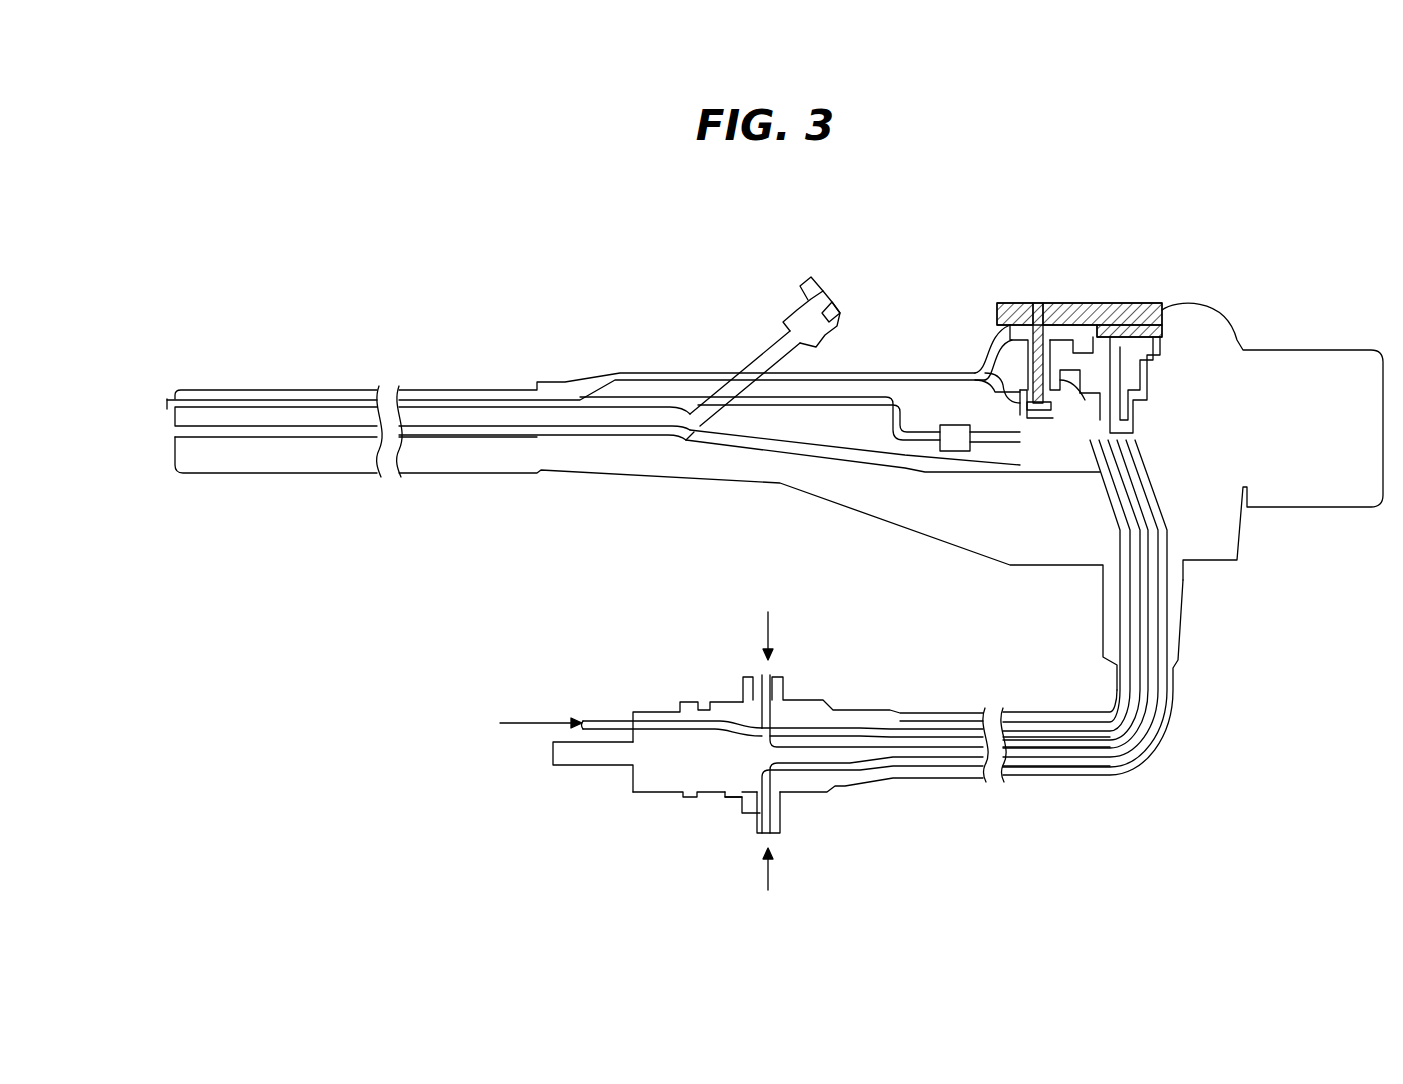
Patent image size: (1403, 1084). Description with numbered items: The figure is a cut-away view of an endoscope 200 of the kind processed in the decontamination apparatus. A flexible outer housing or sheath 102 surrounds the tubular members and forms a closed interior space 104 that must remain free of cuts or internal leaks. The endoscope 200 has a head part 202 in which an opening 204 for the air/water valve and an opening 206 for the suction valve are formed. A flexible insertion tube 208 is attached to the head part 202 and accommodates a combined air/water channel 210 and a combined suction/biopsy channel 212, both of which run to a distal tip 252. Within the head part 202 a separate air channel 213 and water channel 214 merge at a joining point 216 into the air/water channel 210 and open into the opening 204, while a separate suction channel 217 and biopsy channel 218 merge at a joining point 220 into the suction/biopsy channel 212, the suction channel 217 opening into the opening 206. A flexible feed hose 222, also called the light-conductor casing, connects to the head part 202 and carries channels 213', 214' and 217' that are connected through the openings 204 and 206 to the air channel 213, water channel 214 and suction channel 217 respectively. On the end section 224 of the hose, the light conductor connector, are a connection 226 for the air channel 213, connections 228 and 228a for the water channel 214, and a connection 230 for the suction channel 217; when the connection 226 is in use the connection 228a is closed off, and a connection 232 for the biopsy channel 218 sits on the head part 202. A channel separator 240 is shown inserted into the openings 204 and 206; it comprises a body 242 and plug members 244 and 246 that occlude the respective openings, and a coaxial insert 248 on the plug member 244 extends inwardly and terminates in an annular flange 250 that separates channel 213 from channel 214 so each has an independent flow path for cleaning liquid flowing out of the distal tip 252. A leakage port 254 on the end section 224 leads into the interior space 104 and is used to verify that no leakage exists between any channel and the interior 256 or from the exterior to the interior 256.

The outer housing or sheath 102 is at (341, 478).
The interior space 104 is at (457, 453).
The endoscope 200 is at (937, 266).
The head part 202 is at (1252, 340).
The opening 204 is at (990, 372).
The opening 206 is at (1127, 370).
The flexible insertion tube 208 is at (319, 388).
The combined air/water channel 210 is at (203, 400).
The combined suction/biopsy channel 212 is at (243, 432).
The air channel 213 is at (950, 349).
The channel 213' is at (1056, 692).
The water channel 214 is at (760, 467).
The channel 214' is at (1009, 684).
The joining point 216 is at (567, 395).
The suction channel 217 is at (893, 501).
The channel 217' is at (1056, 810).
The biopsy channel 218 is at (752, 372).
The joining point 220 is at (678, 418).
The flexible feed hose 222 is at (1154, 766).
The end section 224 is at (638, 800).
The connection 226 is at (778, 697).
The connection 228 is at (603, 720).
The connection 228a is at (742, 692).
The connection 230 is at (757, 812).
The connection 232 is at (890, 268).
The channel separator 240 is at (1138, 247).
The body 242 is at (1070, 303).
The plug member 244 is at (1037, 310).
The plug member 246 is at (1140, 302).
The coaxial insert 248 is at (1128, 368).
The annular flange 250 is at (1035, 452).
The distal tip 252 is at (178, 487).
The leakage port 254 is at (726, 808).
The interior 256 is at (705, 775).